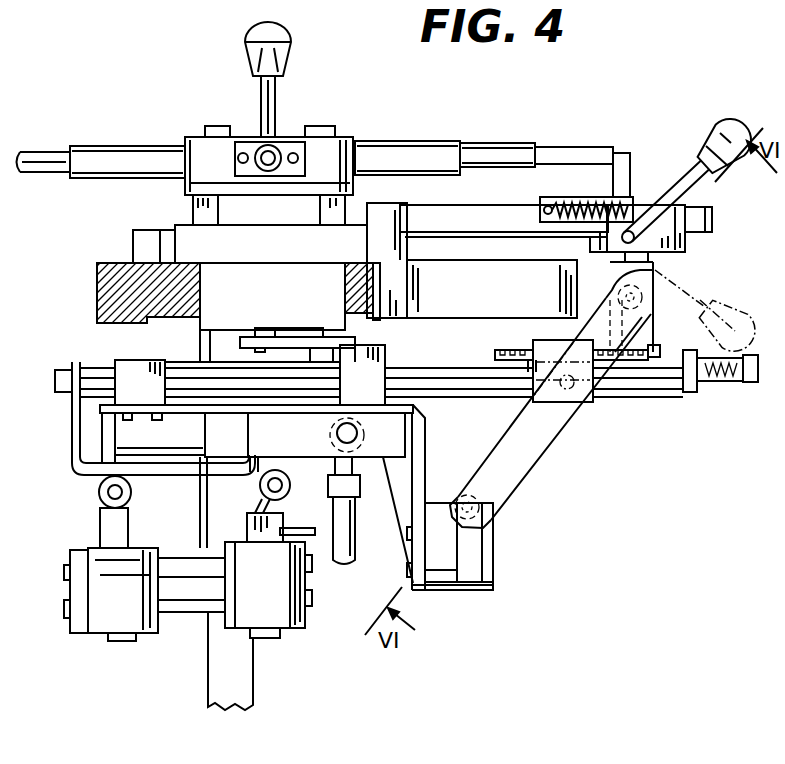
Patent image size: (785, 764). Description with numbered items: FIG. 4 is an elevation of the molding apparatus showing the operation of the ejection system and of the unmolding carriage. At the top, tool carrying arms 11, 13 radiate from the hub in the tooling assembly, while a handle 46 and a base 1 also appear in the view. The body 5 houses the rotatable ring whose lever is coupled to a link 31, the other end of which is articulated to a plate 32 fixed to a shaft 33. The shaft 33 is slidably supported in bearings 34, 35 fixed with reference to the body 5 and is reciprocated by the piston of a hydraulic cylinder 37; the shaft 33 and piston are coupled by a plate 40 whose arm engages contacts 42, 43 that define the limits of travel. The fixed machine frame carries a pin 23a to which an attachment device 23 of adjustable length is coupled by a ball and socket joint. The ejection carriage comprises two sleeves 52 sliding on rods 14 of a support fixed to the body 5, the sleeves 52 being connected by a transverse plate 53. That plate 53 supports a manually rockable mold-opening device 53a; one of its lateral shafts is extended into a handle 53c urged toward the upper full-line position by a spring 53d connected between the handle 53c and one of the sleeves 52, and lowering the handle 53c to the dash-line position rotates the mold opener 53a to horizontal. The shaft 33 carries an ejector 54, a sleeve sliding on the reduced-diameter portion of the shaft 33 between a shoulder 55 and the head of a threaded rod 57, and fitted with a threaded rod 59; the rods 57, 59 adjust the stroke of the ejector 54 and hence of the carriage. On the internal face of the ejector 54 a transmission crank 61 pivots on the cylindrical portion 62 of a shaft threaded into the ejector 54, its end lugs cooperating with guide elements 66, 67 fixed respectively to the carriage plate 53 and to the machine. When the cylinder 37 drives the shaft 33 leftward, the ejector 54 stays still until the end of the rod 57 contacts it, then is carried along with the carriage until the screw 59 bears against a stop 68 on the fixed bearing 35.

The base 1 is at (100, 288).
The body 5 is at (148, 262).
The tool carrying arm 11 is at (109, 152).
The tool carrying arm 13 is at (425, 147).
The rods 14 is at (470, 220).
The attachment device 23 is at (346, 555).
The pin 23a is at (356, 443).
The link 31 is at (287, 338).
The plate 32 is at (272, 296).
The shaft 33 is at (489, 372).
The bearing 34 is at (125, 362).
The bearing 35 is at (388, 378).
The hydraulic cylinder 37 is at (183, 372).
The plate 40 is at (74, 440).
The contact 42 is at (268, 470).
The contact 43 is at (98, 531).
The handle 46 is at (270, 101).
The sleeves 52 is at (698, 215).
The transverse plate 53 is at (662, 253).
The mold-opening device 53a is at (614, 185).
The handle 53c is at (690, 172).
The spring 53d is at (636, 198).
The ejector 54 is at (593, 402).
The shoulder 55 is at (533, 360).
The threaded rod 57 is at (727, 380).
The threaded rod 59 is at (507, 352).
The transmission crank 61 is at (530, 442).
The cylindrical portion 62 is at (567, 390).
The guide element 66 is at (609, 288).
The guide element 67 is at (476, 548).
The stop 68 is at (388, 348).